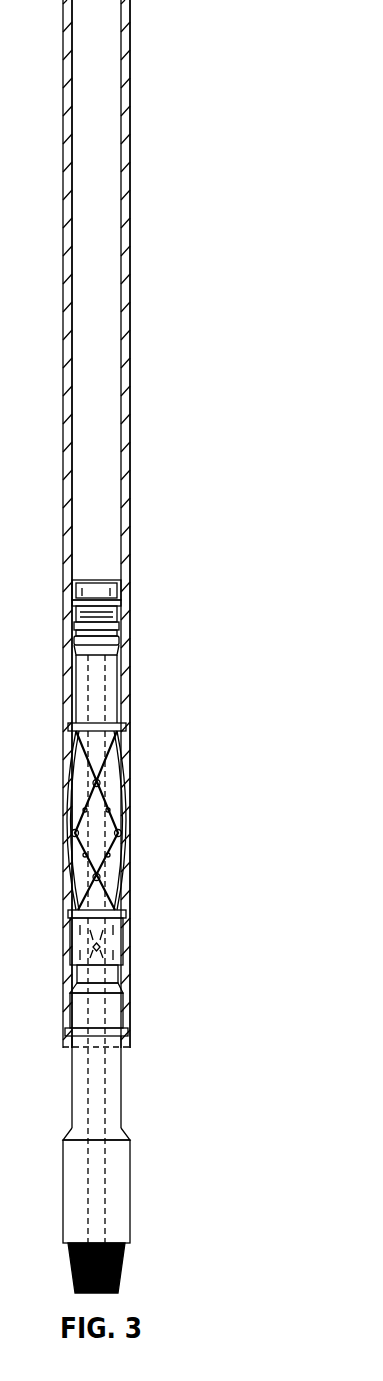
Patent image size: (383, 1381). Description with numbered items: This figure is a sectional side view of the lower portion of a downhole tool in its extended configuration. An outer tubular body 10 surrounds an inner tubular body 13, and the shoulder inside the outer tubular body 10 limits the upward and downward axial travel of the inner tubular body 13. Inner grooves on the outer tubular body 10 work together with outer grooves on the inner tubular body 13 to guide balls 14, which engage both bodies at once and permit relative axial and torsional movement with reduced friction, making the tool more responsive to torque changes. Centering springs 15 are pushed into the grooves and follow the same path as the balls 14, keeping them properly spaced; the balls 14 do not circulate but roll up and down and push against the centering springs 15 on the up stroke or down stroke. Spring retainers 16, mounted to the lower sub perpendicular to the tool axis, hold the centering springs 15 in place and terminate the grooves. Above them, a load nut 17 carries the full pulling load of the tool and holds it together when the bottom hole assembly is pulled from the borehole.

The outer tubular body 10 is at (131, 368).
The inner tubular body 13 is at (95, 1182).
The balls 14 is at (123, 837).
The centering springs 15 is at (125, 762).
The spring retainers 16 is at (130, 730).
The load nut 17 is at (130, 595).